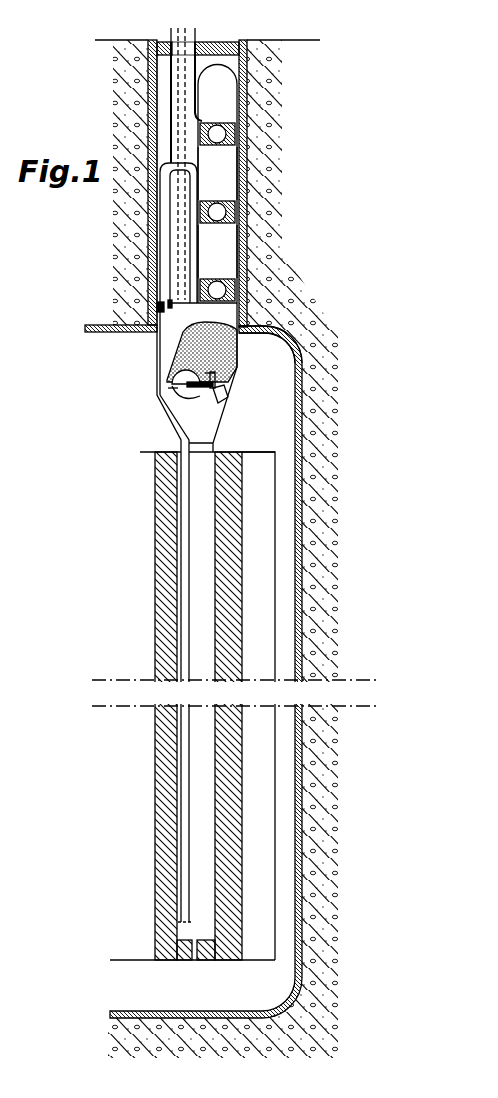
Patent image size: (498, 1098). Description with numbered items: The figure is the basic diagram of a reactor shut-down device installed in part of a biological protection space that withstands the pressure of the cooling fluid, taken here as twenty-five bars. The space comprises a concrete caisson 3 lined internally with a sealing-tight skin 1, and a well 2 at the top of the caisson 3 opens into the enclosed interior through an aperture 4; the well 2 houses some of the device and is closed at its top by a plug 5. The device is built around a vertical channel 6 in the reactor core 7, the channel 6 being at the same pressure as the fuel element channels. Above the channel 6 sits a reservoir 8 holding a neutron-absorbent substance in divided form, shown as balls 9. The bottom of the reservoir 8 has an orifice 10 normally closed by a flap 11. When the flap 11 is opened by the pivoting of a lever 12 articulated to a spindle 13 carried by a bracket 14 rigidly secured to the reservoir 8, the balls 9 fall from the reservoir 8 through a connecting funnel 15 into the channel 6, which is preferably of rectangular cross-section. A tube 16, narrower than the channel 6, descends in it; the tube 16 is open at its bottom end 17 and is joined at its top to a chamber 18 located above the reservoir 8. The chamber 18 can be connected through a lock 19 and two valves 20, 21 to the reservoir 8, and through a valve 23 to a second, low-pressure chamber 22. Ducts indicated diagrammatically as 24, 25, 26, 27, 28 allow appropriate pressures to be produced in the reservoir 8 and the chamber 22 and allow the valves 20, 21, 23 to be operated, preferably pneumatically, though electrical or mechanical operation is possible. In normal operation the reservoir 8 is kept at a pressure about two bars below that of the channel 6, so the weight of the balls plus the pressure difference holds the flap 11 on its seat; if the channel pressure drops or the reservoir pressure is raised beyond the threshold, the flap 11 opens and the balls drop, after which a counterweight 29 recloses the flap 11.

The sealing-tight skin 1 is at (305, 393).
The well 2 is at (160, 78).
The concrete caisson 3 is at (262, 142).
The aperture 4 is at (287, 330).
The plug 5 is at (246, 42).
The vertical channel 6 is at (202, 512).
The reactor core 7 is at (237, 515).
The reservoir 8 is at (178, 320).
The balls 9 is at (178, 360).
The orifice 10 is at (188, 383).
The flap 11 is at (176, 388).
The lever 12 is at (210, 390).
The spindle 13 is at (218, 380).
The bracket 14 is at (215, 373).
The connecting funnel 15 is at (176, 428).
The tube 16 is at (189, 573).
The bottom end 17 is at (178, 923).
The chamber 18 is at (226, 179).
The lock 19 is at (226, 265).
The valve 20 is at (218, 212).
The valve 21 is at (218, 293).
The low-pressure chamber 22 is at (226, 95).
The valve 23 is at (237, 131).
The duct 24 is at (158, 251).
The duct 25 is at (196, 31).
The duct 26 is at (172, 225).
The duct 27 is at (183, 183).
The duct 28 is at (190, 125).
The counterweight 29 is at (218, 402).